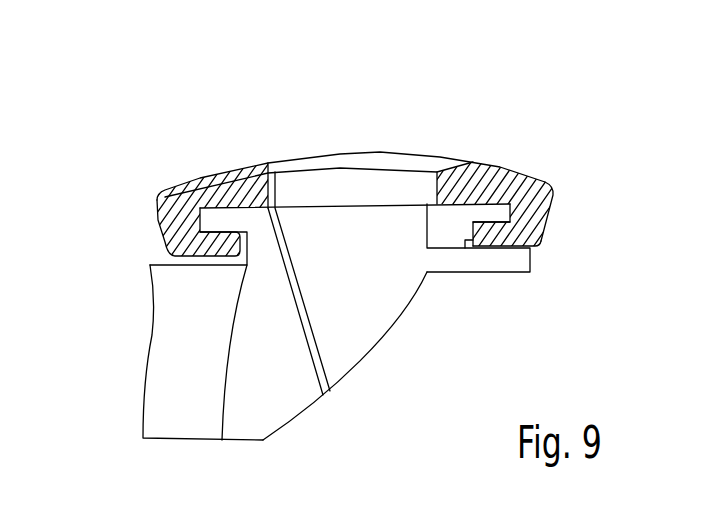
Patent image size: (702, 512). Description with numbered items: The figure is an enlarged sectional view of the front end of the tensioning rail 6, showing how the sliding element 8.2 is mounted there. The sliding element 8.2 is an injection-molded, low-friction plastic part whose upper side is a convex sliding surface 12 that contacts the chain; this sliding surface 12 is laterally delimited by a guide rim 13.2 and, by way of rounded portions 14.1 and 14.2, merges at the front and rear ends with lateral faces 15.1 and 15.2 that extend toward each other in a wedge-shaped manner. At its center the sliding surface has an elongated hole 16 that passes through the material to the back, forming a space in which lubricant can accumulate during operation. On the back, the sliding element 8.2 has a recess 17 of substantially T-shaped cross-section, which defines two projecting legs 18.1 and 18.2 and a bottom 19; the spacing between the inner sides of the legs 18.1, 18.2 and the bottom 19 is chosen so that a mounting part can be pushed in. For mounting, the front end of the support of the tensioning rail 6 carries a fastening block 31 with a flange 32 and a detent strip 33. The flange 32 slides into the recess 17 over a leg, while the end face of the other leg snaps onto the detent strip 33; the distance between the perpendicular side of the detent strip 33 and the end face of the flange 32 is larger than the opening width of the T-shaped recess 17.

The tensioning rail 6 is at (375, 386).
The sliding element 8.2 is at (536, 176).
The sliding surface 12 is at (468, 165).
The guide rim 13.2 is at (451, 160).
The rounded portion 14.1 is at (155, 197).
The rounded portion 14.2 is at (553, 188).
The lateral face 15.1 is at (158, 220).
The lateral face 15.2 is at (551, 218).
The elongated hole 16 is at (364, 170).
The recess 17 is at (452, 224).
The leg 18.1 is at (152, 258).
The leg 18.2 is at (530, 247).
The bottom 19 is at (442, 212).
The fastening block 31 is at (328, 225).
The flange 32 is at (222, 440).
The detent strip 33 is at (462, 224).